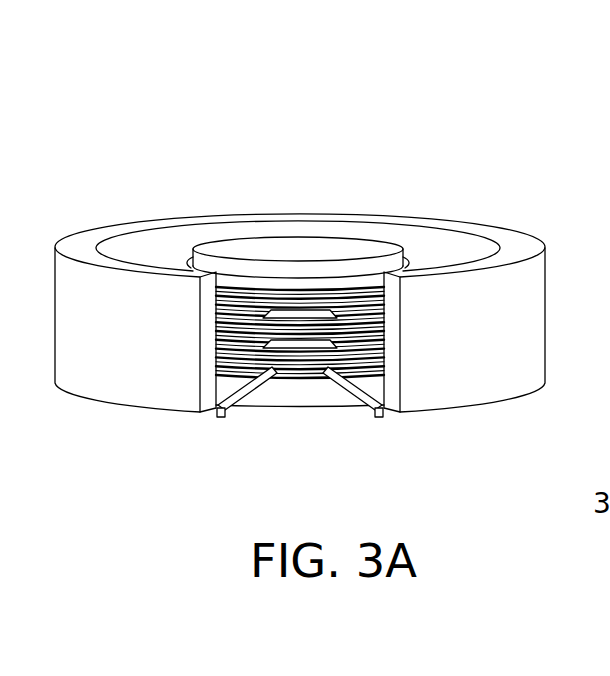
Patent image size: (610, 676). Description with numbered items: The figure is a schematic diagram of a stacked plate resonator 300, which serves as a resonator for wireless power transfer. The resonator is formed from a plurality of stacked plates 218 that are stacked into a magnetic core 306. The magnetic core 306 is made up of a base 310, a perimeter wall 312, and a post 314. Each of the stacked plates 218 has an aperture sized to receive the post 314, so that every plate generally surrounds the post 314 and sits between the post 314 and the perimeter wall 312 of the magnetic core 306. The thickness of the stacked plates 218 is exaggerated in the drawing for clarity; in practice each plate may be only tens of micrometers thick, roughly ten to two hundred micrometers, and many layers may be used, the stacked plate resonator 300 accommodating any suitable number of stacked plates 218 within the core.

The stacked plate resonator 300 is at (104, 182).
The stacked plates 218 is at (478, 188).
The magnetic core 306 is at (518, 252).
The perimeter wall 312 is at (445, 383).
The post 314 is at (290, 248).
The base 310 is at (292, 393).